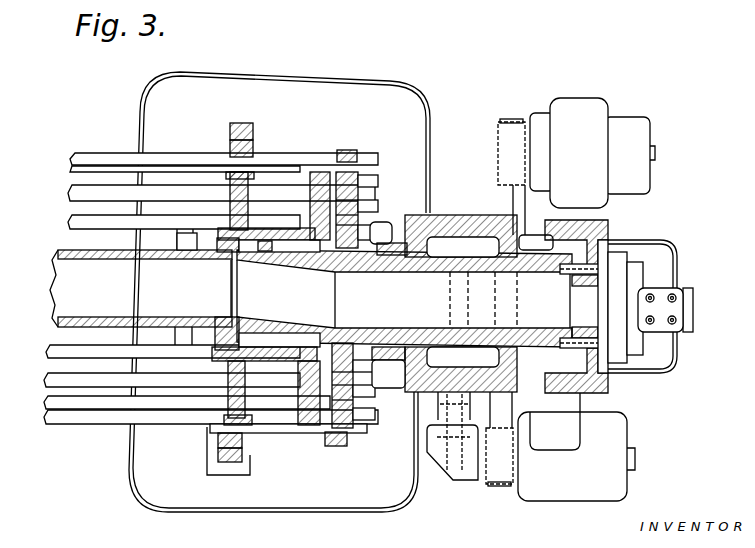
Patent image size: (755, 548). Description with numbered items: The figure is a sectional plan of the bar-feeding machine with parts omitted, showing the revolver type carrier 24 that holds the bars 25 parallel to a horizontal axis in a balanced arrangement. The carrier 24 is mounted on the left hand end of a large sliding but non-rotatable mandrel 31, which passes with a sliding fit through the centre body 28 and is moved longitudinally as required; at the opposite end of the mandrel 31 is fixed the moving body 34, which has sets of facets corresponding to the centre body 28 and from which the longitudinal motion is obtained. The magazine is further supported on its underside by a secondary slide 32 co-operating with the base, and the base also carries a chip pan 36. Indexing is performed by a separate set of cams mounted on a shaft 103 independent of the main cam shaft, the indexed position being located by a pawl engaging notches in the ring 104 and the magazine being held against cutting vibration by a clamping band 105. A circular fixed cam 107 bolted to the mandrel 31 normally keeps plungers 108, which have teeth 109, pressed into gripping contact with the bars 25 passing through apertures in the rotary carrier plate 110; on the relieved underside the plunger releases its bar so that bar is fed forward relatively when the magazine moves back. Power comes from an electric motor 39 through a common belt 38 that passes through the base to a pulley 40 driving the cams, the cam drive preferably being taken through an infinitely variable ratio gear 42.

The chip pan 36 is at (178, 98).
The bars 25 is at (99, 183).
The clamping band 105 is at (233, 122).
The ring 104 is at (251, 123).
The teeth 109 is at (341, 150).
The rotary carrier plate 110 is at (352, 150).
The plungers 108 is at (376, 441).
The mandrel 31 is at (432, 214).
The centre body 28 is at (458, 234).
The belt 38 is at (507, 198).
The electric motor 39 is at (573, 120).
The circular fixed cam 107 is at (337, 275).
The carrier 24 is at (108, 261).
The secondary slide 32 is at (205, 345).
The shaft 103 is at (413, 398).
The pulley 40 is at (492, 487).
The infinitely variable ratio gear 42 is at (603, 486).
The moving body 34 is at (610, 382).